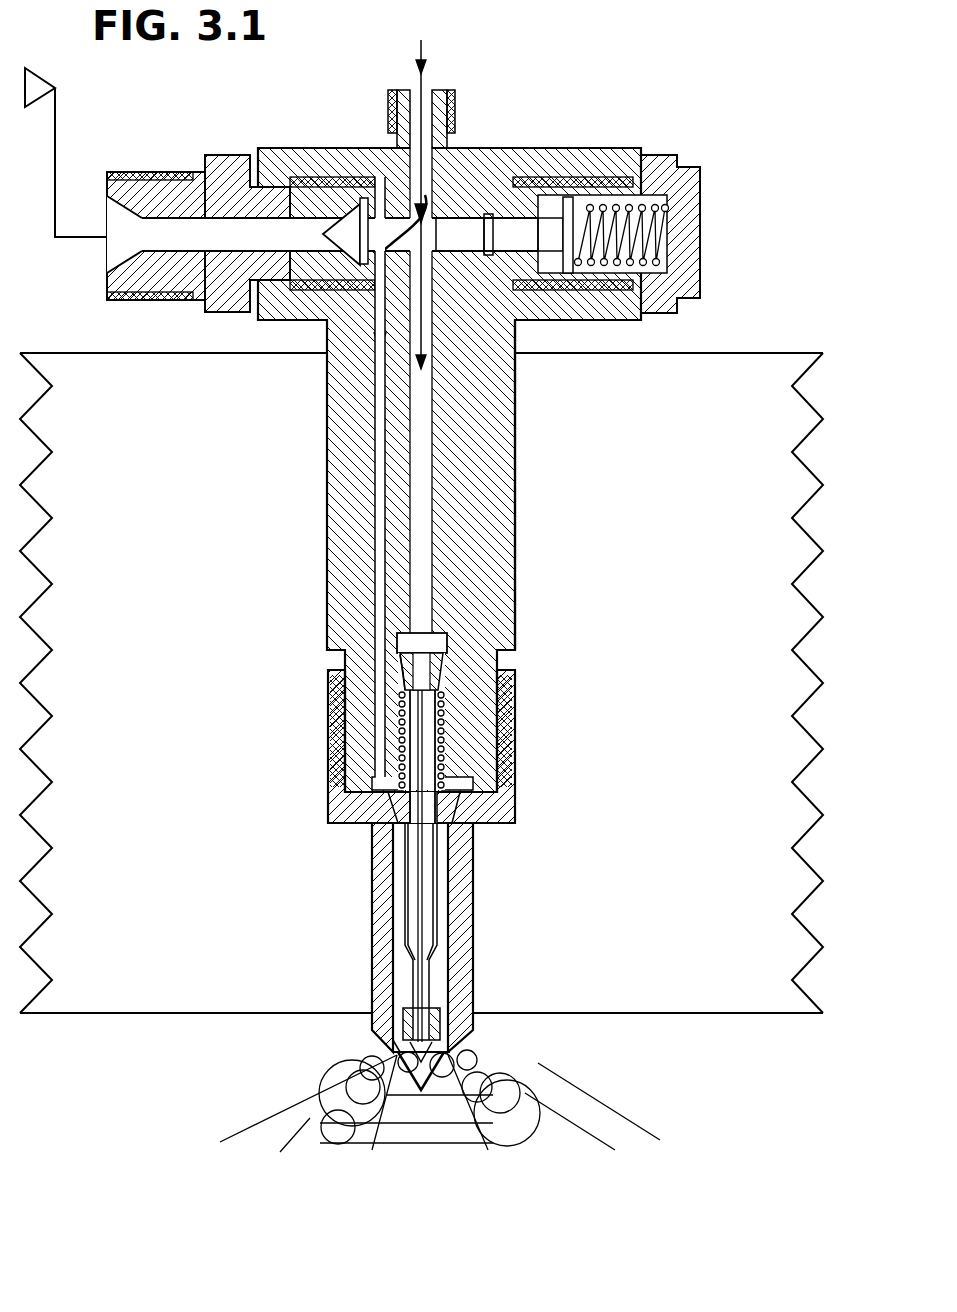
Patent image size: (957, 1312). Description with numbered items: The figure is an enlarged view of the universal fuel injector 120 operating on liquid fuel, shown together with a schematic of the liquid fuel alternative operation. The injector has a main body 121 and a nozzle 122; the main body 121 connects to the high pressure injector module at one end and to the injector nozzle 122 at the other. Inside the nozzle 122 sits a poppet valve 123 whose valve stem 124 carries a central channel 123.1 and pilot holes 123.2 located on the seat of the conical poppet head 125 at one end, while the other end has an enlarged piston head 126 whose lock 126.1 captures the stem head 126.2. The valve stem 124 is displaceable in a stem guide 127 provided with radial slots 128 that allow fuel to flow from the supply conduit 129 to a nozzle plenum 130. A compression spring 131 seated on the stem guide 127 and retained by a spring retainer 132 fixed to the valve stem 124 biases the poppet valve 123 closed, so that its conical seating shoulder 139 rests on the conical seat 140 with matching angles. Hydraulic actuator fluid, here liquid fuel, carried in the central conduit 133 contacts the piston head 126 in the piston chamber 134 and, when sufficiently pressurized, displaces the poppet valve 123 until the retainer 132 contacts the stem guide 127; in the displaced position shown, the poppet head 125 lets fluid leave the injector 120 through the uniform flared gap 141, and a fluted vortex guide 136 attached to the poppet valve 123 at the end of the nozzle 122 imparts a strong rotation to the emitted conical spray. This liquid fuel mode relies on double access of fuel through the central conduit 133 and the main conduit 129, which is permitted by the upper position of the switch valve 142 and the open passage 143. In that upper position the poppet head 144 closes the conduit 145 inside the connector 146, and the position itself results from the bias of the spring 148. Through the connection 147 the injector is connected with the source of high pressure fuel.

The universal fuel injector 120 is at (495, 600).
The main body 121 is at (517, 562).
The nozzle 122 is at (520, 760).
The poppet valve 123 is at (447, 930).
The central channel 123.1 is at (417, 960).
The pilot holes 123.2 is at (377, 1077).
The valve stem 124 is at (403, 927).
The conical poppet head 125 is at (453, 1080).
The piston head 126 is at (500, 655).
The lock 126.1 is at (398, 684).
The stem head 126.2 is at (398, 662).
The stem guide 127 is at (450, 803).
The radial slots 128 is at (470, 823).
The supply conduit 129 is at (372, 540).
The nozzle plenum 130 is at (440, 978).
The compression spring 131 is at (447, 747).
The spring retainer 132 is at (453, 710).
The central conduit 133 is at (425, 527).
The piston chamber 134 is at (442, 642).
The fluted vortex guide 136 is at (435, 1023).
The conical seating shoulder 139 is at (440, 1040).
The conical seat 140 is at (407, 1077).
The uniform flared gap 141 is at (400, 1048).
The switch valve 142 is at (458, 230).
The open passage 143 is at (382, 213).
The poppet head 144 is at (317, 203).
The conduit 145 is at (248, 232).
The connector 146 is at (155, 197).
The connection 147 is at (423, 108).
The spring 148 is at (595, 212).